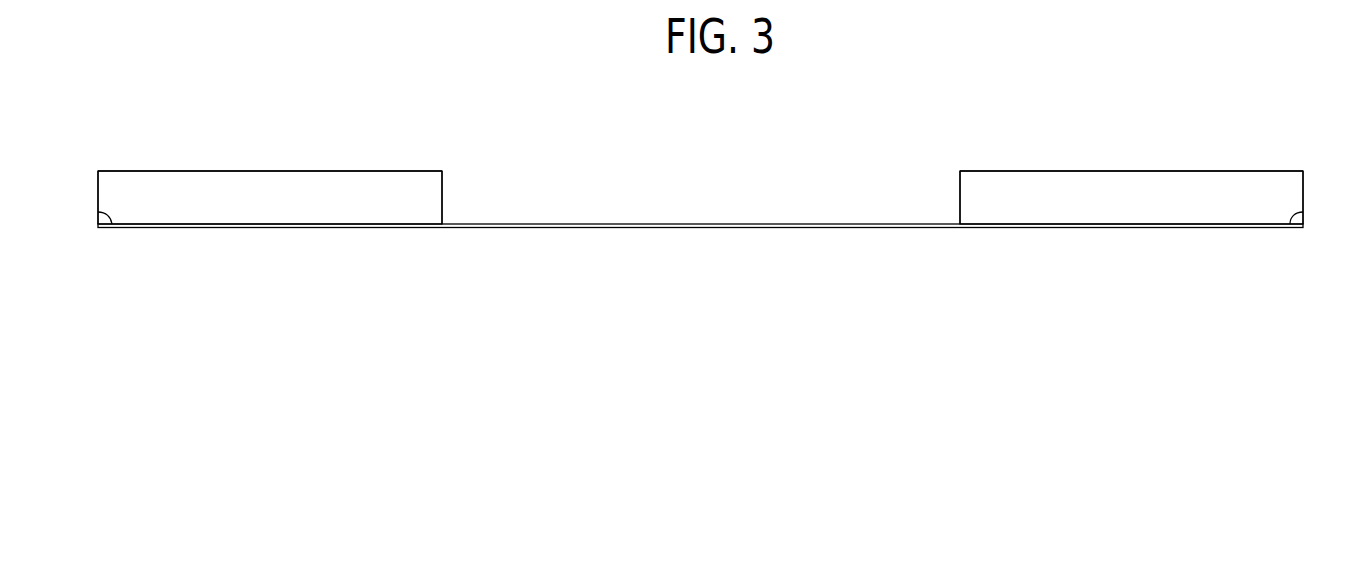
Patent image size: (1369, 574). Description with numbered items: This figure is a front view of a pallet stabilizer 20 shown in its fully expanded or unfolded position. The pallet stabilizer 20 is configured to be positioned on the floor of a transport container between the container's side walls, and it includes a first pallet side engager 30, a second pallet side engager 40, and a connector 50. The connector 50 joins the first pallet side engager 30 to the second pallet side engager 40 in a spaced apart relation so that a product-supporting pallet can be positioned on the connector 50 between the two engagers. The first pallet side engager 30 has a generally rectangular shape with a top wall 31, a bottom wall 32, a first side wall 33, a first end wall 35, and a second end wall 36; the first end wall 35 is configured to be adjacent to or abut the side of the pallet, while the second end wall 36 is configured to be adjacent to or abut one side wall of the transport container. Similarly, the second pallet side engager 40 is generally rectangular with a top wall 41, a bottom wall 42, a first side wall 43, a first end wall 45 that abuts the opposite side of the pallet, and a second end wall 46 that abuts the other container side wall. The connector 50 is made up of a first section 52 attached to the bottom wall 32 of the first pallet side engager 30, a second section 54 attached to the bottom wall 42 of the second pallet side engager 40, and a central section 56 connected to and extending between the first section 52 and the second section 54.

The pallet stabilizer 20 is at (234, 300).
The first pallet side engager 30 is at (158, 170).
The top wall 31 is at (266, 170).
The bottom wall 32 is at (98, 212).
The first side wall 33 is at (256, 207).
The first end wall 35 is at (442, 188).
The second end wall 36 is at (98, 188).
The second pallet side engager 40 is at (1243, 170).
The top wall 41 is at (1138, 170).
The bottom wall 42 is at (1303, 212).
The first side wall 43 is at (1123, 207).
The first end wall 45 is at (960, 188).
The second end wall 46 is at (1303, 188).
The connector 50 is at (739, 224).
The first section 52 is at (333, 228).
The second section 54 is at (1068, 228).
The central section 56 is at (702, 228).